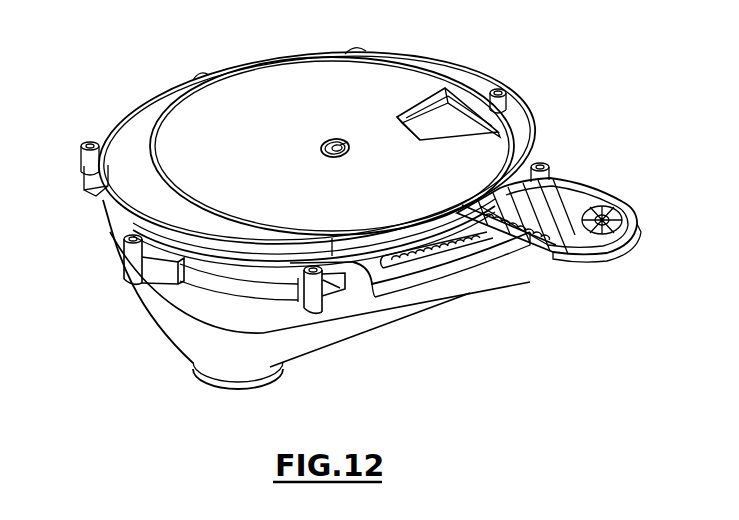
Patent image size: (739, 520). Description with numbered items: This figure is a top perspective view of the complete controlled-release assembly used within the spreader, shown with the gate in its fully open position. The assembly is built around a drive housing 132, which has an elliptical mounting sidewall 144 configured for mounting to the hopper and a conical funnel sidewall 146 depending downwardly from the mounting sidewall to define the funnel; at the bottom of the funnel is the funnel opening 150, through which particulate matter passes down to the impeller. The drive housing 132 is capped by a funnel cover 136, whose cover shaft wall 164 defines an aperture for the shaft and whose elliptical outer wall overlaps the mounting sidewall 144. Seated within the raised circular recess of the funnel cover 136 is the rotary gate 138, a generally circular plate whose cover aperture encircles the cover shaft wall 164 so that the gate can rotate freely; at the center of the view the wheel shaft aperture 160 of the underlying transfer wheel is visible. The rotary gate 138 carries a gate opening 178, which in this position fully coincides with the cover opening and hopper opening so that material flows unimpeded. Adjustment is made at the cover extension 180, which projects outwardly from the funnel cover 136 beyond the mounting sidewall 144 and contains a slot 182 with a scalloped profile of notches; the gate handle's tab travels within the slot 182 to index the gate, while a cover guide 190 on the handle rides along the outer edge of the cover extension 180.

The drive housing 132 is at (176, 335).
The funnel cover 136 is at (137, 145).
The rotary gate 138 is at (360, 68).
The elliptical mounting sidewall 144 is at (118, 255).
The conical funnel sidewall 146 is at (310, 345).
The funnel opening 150 is at (234, 388).
The wheel shaft aperture 160 is at (340, 147).
The cover shaft wall 164 is at (356, 156).
The gate opening 178 is at (462, 93).
The cover extension 180 is at (397, 290).
The slot 182 is at (455, 255).
The cover guide 190 is at (560, 264).